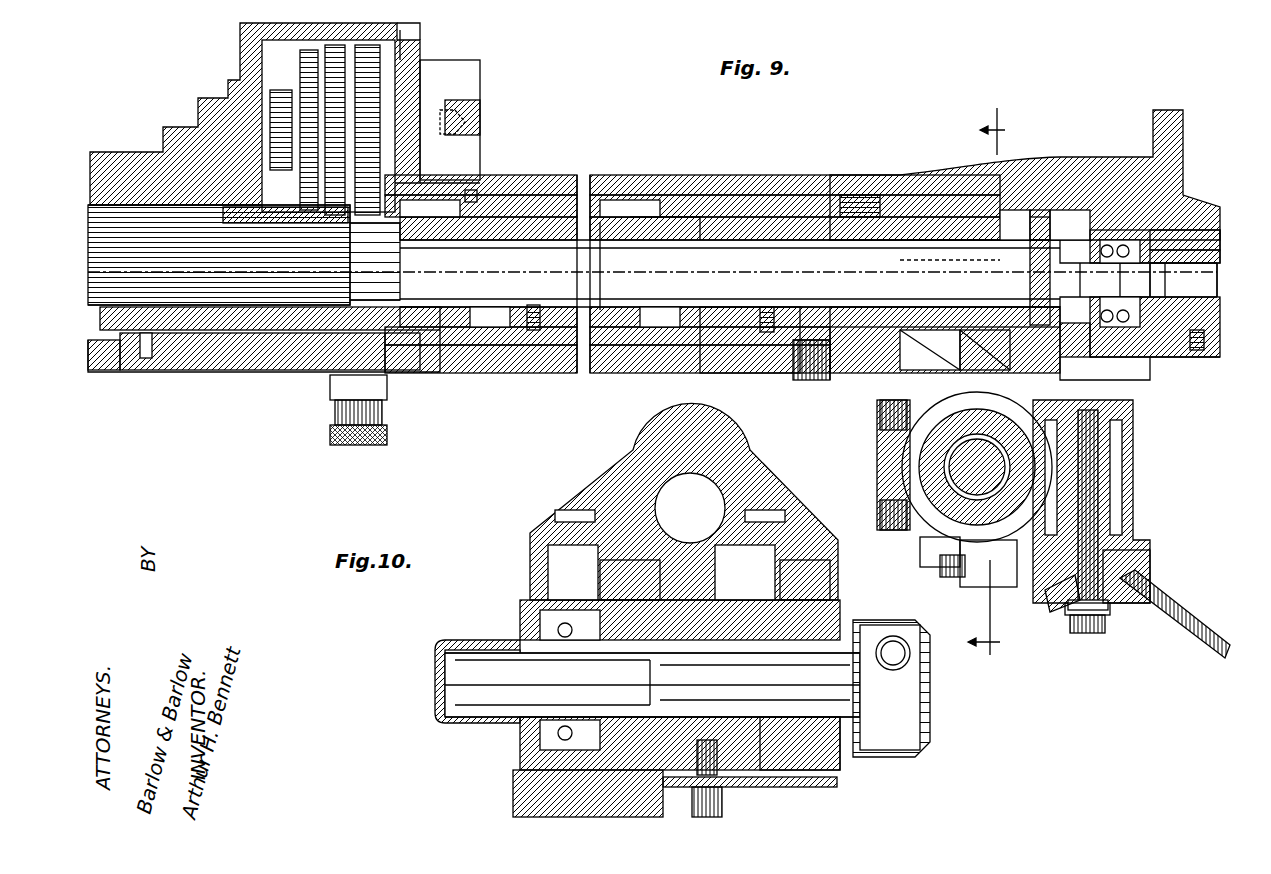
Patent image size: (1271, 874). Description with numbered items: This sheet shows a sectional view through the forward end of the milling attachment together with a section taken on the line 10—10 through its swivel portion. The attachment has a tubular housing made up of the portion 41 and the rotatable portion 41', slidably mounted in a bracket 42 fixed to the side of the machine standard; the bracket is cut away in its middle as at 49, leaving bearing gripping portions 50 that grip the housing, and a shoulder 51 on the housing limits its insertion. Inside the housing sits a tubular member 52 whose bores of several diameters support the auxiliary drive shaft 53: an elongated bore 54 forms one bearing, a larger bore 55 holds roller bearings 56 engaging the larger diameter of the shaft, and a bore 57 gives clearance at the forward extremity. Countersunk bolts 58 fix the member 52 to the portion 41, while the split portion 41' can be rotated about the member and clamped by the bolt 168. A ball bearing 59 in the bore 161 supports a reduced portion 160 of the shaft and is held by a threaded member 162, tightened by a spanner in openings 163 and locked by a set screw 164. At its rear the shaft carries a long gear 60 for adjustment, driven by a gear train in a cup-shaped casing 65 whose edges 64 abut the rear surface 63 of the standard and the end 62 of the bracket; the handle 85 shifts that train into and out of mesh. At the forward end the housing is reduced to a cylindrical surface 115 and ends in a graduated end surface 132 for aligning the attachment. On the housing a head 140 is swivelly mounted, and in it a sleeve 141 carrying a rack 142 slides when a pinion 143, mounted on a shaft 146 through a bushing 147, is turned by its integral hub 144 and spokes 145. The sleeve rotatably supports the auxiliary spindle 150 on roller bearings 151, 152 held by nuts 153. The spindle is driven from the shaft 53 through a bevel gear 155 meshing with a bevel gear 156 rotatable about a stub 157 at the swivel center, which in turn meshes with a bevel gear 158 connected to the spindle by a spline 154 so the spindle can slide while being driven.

In FIG. 9, the section line 10 is at (990, 385).
In FIG. 9, the tubular housing portion 41 is at (659, 282).
In FIG. 9, the rotatable housing portion 41' is at (836, 282).
In FIG. 9, the bracket 42 is at (700, 192).
In FIG. 9, the cut-away middle portion 49 is at (560, 192).
In FIG. 9, the bearing gripping portions 50 is at (530, 192).
In FIG. 9, the shoulder 51 is at (770, 375).
In FIG. 9, the tubular member 52 is at (620, 215).
In FIG. 9, the drive shaft 53 is at (900, 240).
In FIG. 9, the elongated bore 54 is at (930, 258).
In FIG. 9, the larger bore 55 is at (490, 200).
In FIG. 9, the roller bearings 56 is at (470, 195).
In FIG. 9, the clearance bore 57 is at (600, 222).
In FIG. 9, the countersunk bolts 58 is at (535, 330).
In FIG. 9, the ball bearing 59 is at (1182, 150).
In FIG. 9, the long gear 60 is at (278, 300).
In FIG. 9, the bracket end 62 is at (395, 372).
In FIG. 9, the rear surface of standard 63 is at (400, 55).
In FIG. 9, the casing edges 64 is at (420, 40).
In FIG. 9, the cup-shaped casing 65 is at (245, 372).
In FIG. 9, the handle 85 is at (365, 445).
In FIG. 9, the cylindrical surface 115 is at (1190, 215).
In FIG. 9, the graduated end surface 132 is at (1215, 226).
In FIG. 9, the swivel head 140 is at (880, 418).
In FIG. 10, the swivel head 140 is at (528, 624).
In FIG. 9, the sleeve 141 is at (950, 503).
In FIG. 10, the sleeve 141 is at (770, 760).
In FIG. 9, the rack 142 is at (1120, 430).
In FIG. 9, the pinion 143 is at (1122, 456).
In FIG. 9, the hub 144 is at (1150, 562).
In FIG. 9, the spokes 145 is at (1180, 605).
In FIG. 9, the shaft 146 is at (1098, 524).
In FIG. 9, the bushing 147 is at (1060, 610).
In FIG. 9, the auxiliary spindle 150 is at (950, 470).
In FIG. 10, the auxiliary spindle 150 is at (800, 760).
In FIG. 10, the roller bearing 151 is at (912, 722).
In FIG. 10, the roller bearing 152 is at (660, 712).
In FIG. 10, the nuts 153 is at (610, 775).
In FIG. 10, the spline 154 is at (490, 722).
In FIG. 9, the bevel gear 155 is at (1040, 212).
In FIG. 9, the bevel gear 156 is at (1100, 380).
In FIG. 10, the bevel gear 156 is at (560, 553).
In FIG. 9, the stub 157 is at (965, 455).
In FIG. 10, the bevel gear 158 is at (525, 765).
In FIG. 9, the reduced portion 160 is at (1215, 312).
In FIG. 9, the bore 161 is at (1170, 362).
In FIG. 9, the threaded member 162 is at (1215, 283).
In FIG. 9, the spanner openings 163 is at (1238, 255).
In FIG. 9, the set screw 164 is at (1215, 342).
In FIG. 9, the clamping bolt 168 is at (785, 412).